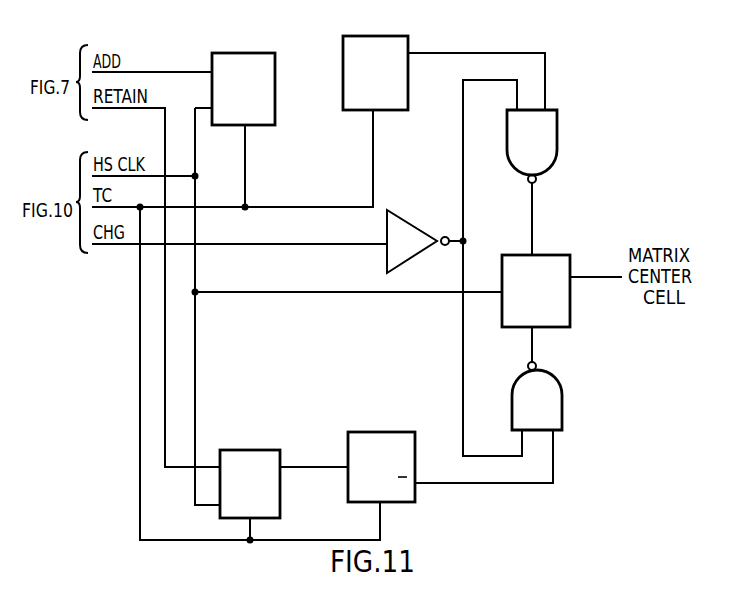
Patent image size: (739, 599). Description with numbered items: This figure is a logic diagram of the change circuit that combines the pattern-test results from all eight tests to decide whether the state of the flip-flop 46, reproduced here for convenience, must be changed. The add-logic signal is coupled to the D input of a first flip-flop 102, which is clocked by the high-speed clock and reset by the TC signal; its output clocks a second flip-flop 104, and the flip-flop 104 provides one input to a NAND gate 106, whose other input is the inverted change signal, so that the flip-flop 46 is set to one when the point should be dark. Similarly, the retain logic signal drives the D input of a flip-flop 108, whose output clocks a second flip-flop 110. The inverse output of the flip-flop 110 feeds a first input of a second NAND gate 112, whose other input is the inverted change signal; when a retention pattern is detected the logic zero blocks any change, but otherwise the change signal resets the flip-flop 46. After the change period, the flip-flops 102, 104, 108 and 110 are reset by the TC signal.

The first flip-flop 102 is at (223, 53).
The second flip-flop 104 is at (348, 36).
The NAND gate 106 is at (507, 128).
The flip-flop 46 is at (509, 255).
The second NAND gate 112 is at (514, 384).
The flip-flop 108 is at (243, 450).
The second flip-flop 110 is at (373, 432).